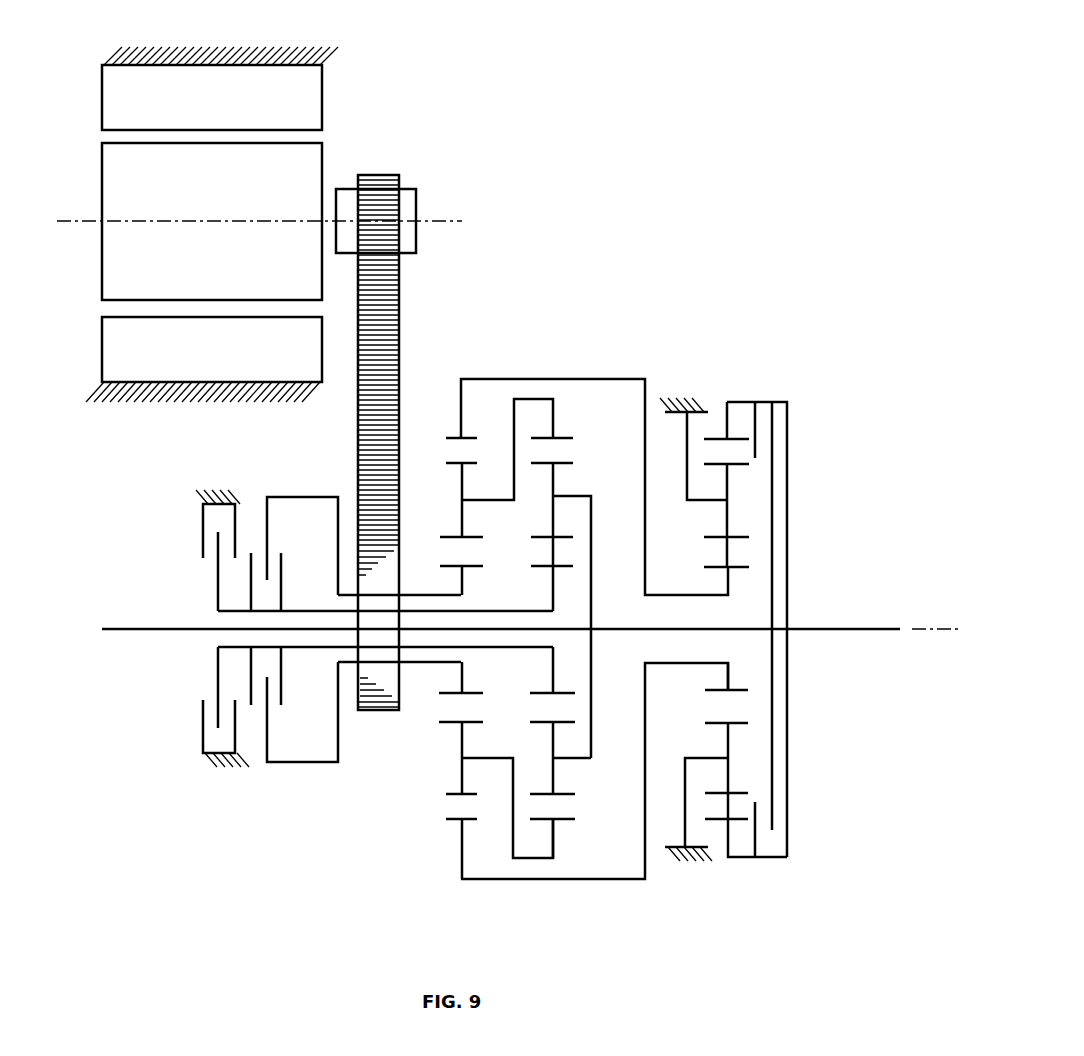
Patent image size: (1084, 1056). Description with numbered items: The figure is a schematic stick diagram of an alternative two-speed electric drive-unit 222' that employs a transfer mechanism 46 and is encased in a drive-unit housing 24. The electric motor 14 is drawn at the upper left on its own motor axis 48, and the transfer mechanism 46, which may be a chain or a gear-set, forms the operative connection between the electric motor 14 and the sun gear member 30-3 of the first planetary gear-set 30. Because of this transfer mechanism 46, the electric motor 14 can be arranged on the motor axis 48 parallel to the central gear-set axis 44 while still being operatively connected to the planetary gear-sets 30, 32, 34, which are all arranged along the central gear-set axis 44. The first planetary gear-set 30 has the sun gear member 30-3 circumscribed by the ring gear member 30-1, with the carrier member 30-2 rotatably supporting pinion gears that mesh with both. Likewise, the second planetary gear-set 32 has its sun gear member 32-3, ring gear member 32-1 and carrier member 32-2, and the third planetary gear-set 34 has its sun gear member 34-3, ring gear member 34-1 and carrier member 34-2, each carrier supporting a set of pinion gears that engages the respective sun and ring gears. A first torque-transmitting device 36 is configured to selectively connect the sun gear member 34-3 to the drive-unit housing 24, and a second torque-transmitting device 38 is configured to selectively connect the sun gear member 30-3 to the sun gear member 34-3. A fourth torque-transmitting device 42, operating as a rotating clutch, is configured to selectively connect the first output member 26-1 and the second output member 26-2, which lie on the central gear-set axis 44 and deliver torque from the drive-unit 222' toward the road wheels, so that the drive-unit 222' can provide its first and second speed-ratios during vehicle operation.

The electric motor 14 is at (102, 212).
The motor axis 48 is at (72, 224).
The transfer mechanism 46 is at (400, 316).
The drive-unit 222' is at (531, 550).
The first output member 26-1 is at (804, 633).
The second output member 26-2 is at (145, 633).
The central gear-set axis 44 is at (924, 634).
The first torque-transmitting device 36 is at (203, 740).
The drive-unit housing 24 is at (235, 762).
The second torque-transmitting device 38 is at (284, 552).
The first planetary gear-set 30 is at (550, 595).
The ring gear member 30-1 is at (466, 436).
The carrier member 30-2 is at (492, 497).
The sun gear member 30-3 is at (438, 678).
The third planetary gear-set 34 is at (606, 482).
The ring gear member 34-1 is at (567, 437).
The carrier member 34-2 is at (582, 494).
The sun gear member 34-3 is at (566, 568).
The second planetary gear-set 32 is at (759, 600).
The ring gear member 32-1 is at (718, 437).
The carrier member 32-2 is at (688, 455).
The sun gear member 32-3 is at (740, 566).
The fourth torque-transmitting device 42 is at (770, 401).